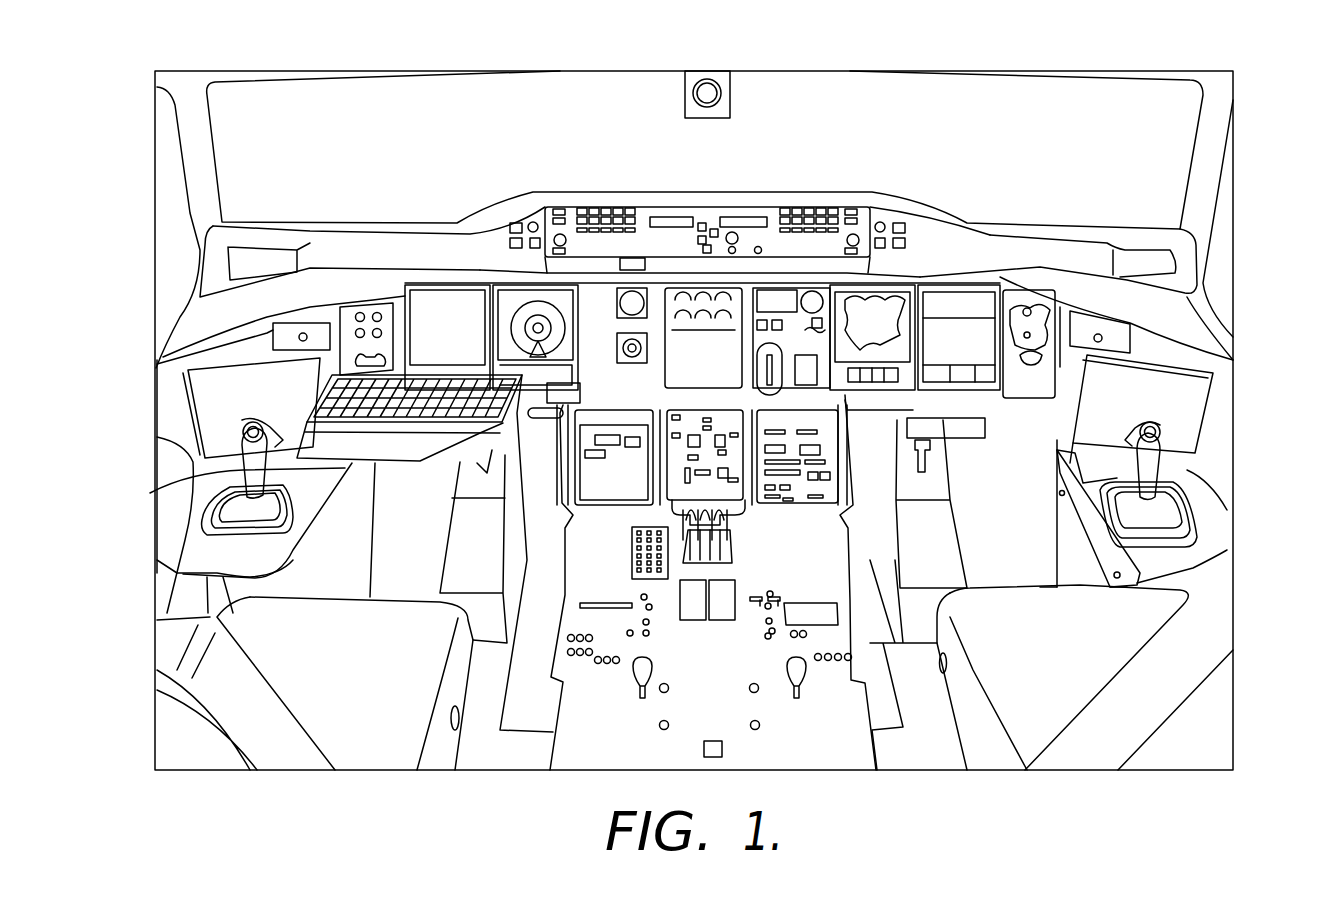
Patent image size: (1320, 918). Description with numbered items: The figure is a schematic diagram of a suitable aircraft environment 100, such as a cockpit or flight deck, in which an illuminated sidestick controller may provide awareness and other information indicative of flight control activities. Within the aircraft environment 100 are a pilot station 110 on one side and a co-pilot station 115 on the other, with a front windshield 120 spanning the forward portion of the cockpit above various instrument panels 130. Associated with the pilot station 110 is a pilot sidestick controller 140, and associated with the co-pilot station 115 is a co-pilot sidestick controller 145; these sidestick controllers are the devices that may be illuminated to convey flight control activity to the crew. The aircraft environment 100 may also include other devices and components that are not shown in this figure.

The aircraft environment 100 is at (129, 96).
The pilot station 110 is at (372, 738).
The co-pilot station 115 is at (1022, 743).
The front windshield 120 is at (1038, 128).
The instrument panels 130 is at (803, 196).
The pilot sidestick controller 140 is at (198, 480).
The co-pilot sidestick controller 145 is at (1215, 455).